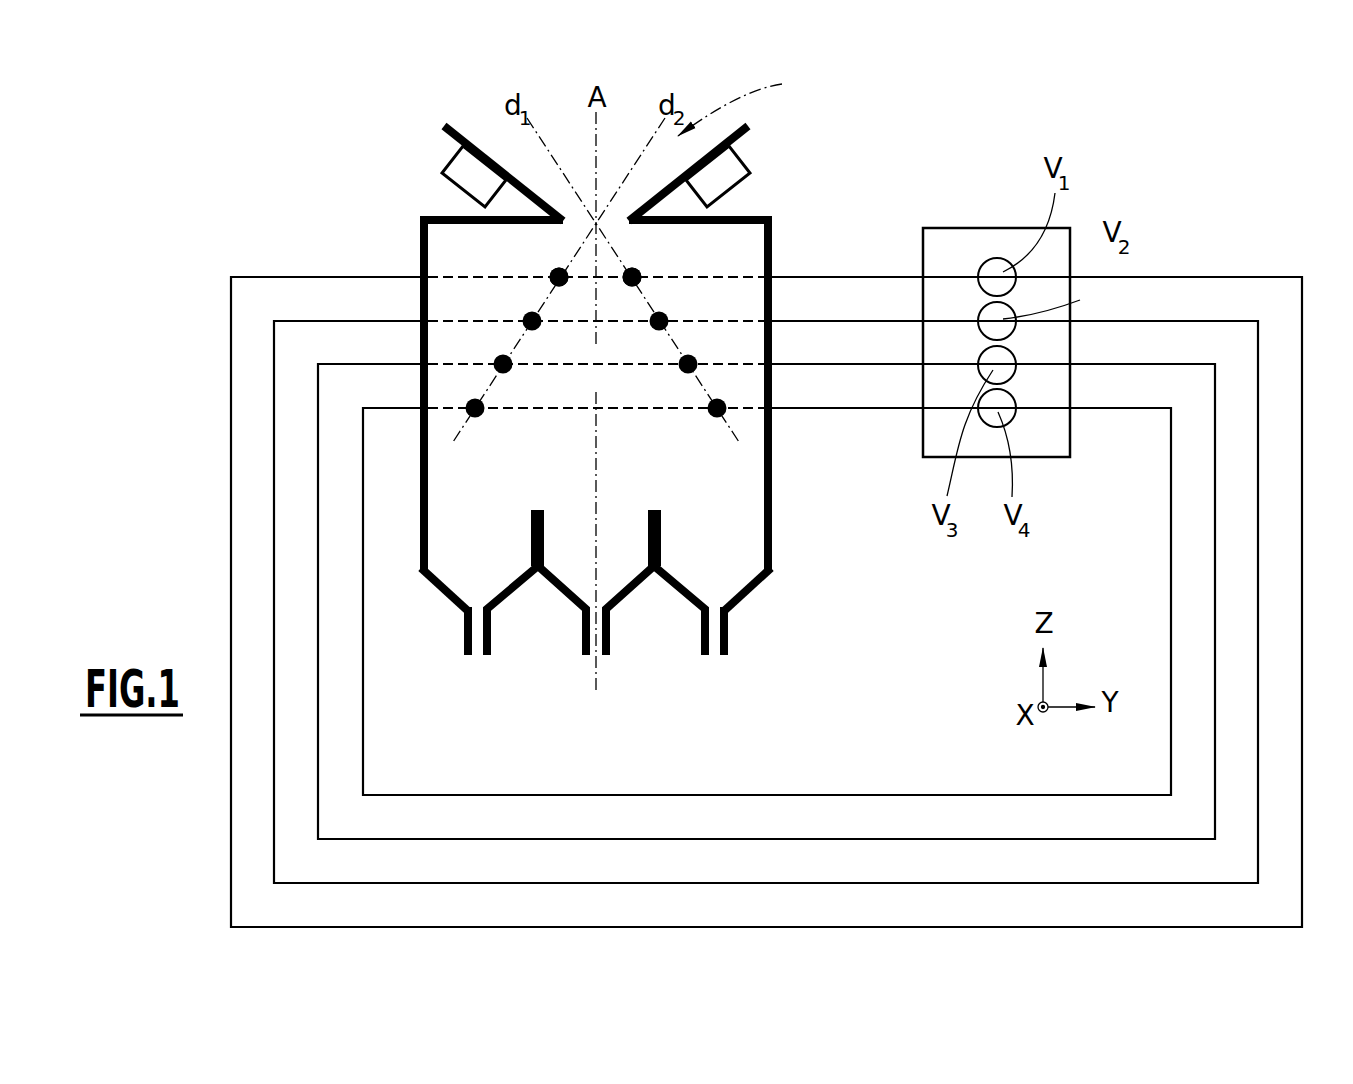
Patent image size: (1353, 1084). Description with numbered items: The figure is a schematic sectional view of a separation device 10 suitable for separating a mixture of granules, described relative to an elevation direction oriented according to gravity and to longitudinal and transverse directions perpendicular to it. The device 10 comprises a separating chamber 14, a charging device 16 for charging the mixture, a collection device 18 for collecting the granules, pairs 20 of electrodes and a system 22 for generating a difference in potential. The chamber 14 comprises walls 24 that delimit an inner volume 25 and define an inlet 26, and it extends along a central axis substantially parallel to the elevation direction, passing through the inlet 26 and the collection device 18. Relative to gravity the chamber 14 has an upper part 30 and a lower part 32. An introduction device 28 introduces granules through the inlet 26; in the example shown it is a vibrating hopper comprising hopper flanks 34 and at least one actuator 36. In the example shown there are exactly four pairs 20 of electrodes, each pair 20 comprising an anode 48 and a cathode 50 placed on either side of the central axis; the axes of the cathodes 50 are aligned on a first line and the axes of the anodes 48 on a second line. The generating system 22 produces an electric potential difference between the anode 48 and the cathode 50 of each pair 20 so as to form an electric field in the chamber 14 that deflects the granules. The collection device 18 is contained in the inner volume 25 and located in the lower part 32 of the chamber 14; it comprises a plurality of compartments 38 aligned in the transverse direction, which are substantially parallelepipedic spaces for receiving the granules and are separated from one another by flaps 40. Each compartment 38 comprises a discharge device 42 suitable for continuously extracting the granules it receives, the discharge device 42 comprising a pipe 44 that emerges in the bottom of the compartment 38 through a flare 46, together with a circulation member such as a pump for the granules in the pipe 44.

The separation device 10 is at (1240, 185).
The separating chamber 14 is at (786, 518).
The charging device 16 is at (721, 130).
The collection device 18 is at (616, 550).
The pair of electrodes 20 is at (580, 279).
The system for generating a difference in potential 22 is at (1076, 214).
The walls 24 is at (422, 510).
The inner volume 25 is at (582, 384).
The inlet 26 is at (573, 226).
The introduction device 28 is at (745, 101).
The upper part 30 is at (648, 257).
The lower part 32 is at (633, 477).
The hopper flanks 34 is at (492, 157).
The actuator 36 is at (462, 168).
The compartments 38 is at (727, 571).
The flaps 40 is at (536, 508).
The discharge device 42 is at (511, 614).
The pipe 44 is at (467, 636).
The flare 46 is at (435, 585).
The anode 48 is at (509, 370).
The cathode 50 is at (683, 370).